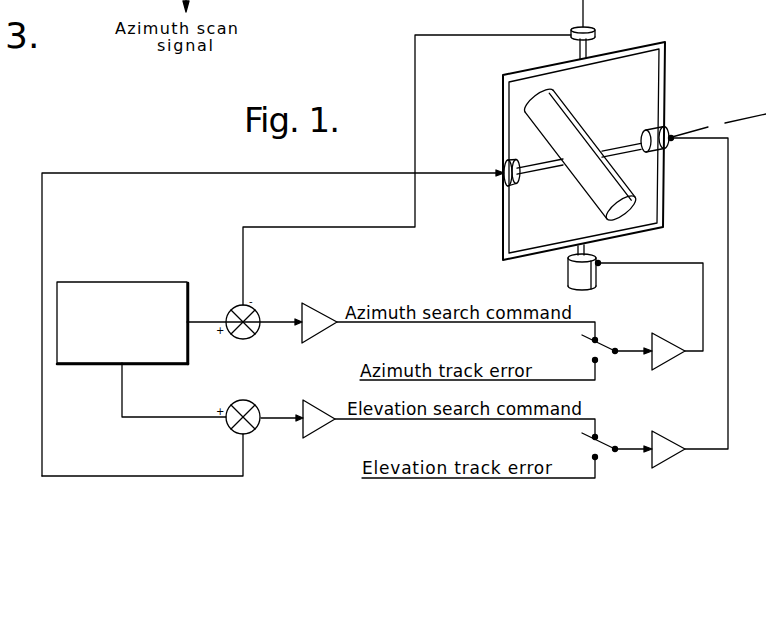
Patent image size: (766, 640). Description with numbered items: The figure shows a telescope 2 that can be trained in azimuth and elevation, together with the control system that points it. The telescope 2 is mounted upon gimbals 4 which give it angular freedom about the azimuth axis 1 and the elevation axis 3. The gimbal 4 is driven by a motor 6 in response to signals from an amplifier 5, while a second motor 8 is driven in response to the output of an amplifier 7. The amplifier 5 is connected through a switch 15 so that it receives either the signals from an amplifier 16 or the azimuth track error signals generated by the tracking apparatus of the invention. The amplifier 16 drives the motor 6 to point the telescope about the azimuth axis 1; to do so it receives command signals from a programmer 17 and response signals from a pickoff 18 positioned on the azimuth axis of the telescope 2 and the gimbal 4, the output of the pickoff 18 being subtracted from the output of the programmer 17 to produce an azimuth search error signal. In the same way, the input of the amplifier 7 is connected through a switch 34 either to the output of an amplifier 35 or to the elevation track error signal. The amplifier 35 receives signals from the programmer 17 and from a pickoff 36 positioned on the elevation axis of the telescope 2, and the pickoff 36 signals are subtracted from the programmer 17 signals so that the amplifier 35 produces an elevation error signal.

The azimuth axis 1 is at (584, 15).
The telescope 2 is at (561, 110).
The elevation axis 3 is at (709, 126).
The gimbals 4 is at (603, 151).
The amplifier 5 is at (668, 357).
The motor 6 is at (598, 284).
The amplifier 7 is at (668, 455).
The motor 8 is at (664, 129).
The switch 15 is at (608, 346).
The amplifier 16 is at (318, 318).
The programmer 17 is at (122, 308).
The pickoff 18 is at (571, 30).
The switch 34 is at (603, 443).
The amplifier 35 is at (315, 441).
The pickoff 36 is at (513, 184).